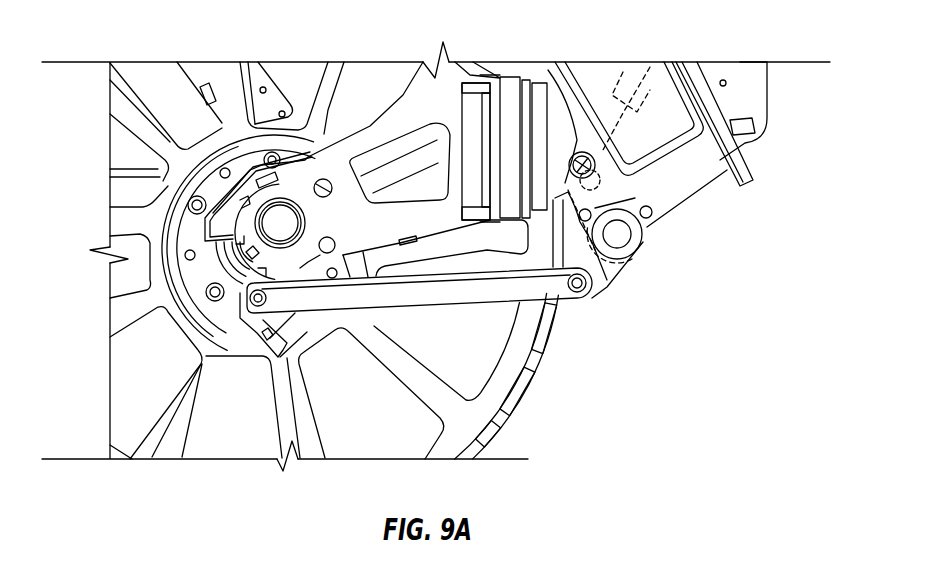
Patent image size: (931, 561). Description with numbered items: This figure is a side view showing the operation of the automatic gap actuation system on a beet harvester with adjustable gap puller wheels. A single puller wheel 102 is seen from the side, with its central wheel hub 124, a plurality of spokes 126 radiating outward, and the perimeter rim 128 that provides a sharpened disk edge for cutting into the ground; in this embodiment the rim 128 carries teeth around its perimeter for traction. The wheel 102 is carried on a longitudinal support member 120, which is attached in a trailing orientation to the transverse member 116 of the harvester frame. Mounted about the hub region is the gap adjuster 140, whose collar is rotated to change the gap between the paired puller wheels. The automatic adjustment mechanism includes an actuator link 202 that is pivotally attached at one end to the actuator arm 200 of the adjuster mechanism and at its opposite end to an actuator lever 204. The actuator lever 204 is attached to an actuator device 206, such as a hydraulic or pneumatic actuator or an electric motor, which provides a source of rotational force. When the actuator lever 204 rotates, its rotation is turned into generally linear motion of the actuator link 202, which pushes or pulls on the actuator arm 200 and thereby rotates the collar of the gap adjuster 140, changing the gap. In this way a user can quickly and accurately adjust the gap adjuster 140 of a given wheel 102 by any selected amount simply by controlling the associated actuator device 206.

The puller wheel 102 is at (480, 405).
The transverse member 116 is at (688, 80).
The longitudinal support member 120 is at (383, 120).
The central wheel hub 124 is at (200, 286).
The spokes 126 is at (182, 418).
The perimeter rim 128 is at (513, 353).
The gap adjuster 140 is at (182, 223).
The actuator arm 200 is at (270, 327).
The actuator link 202 is at (422, 292).
The actuator lever 204 is at (602, 267).
The actuator device 206 is at (648, 75).